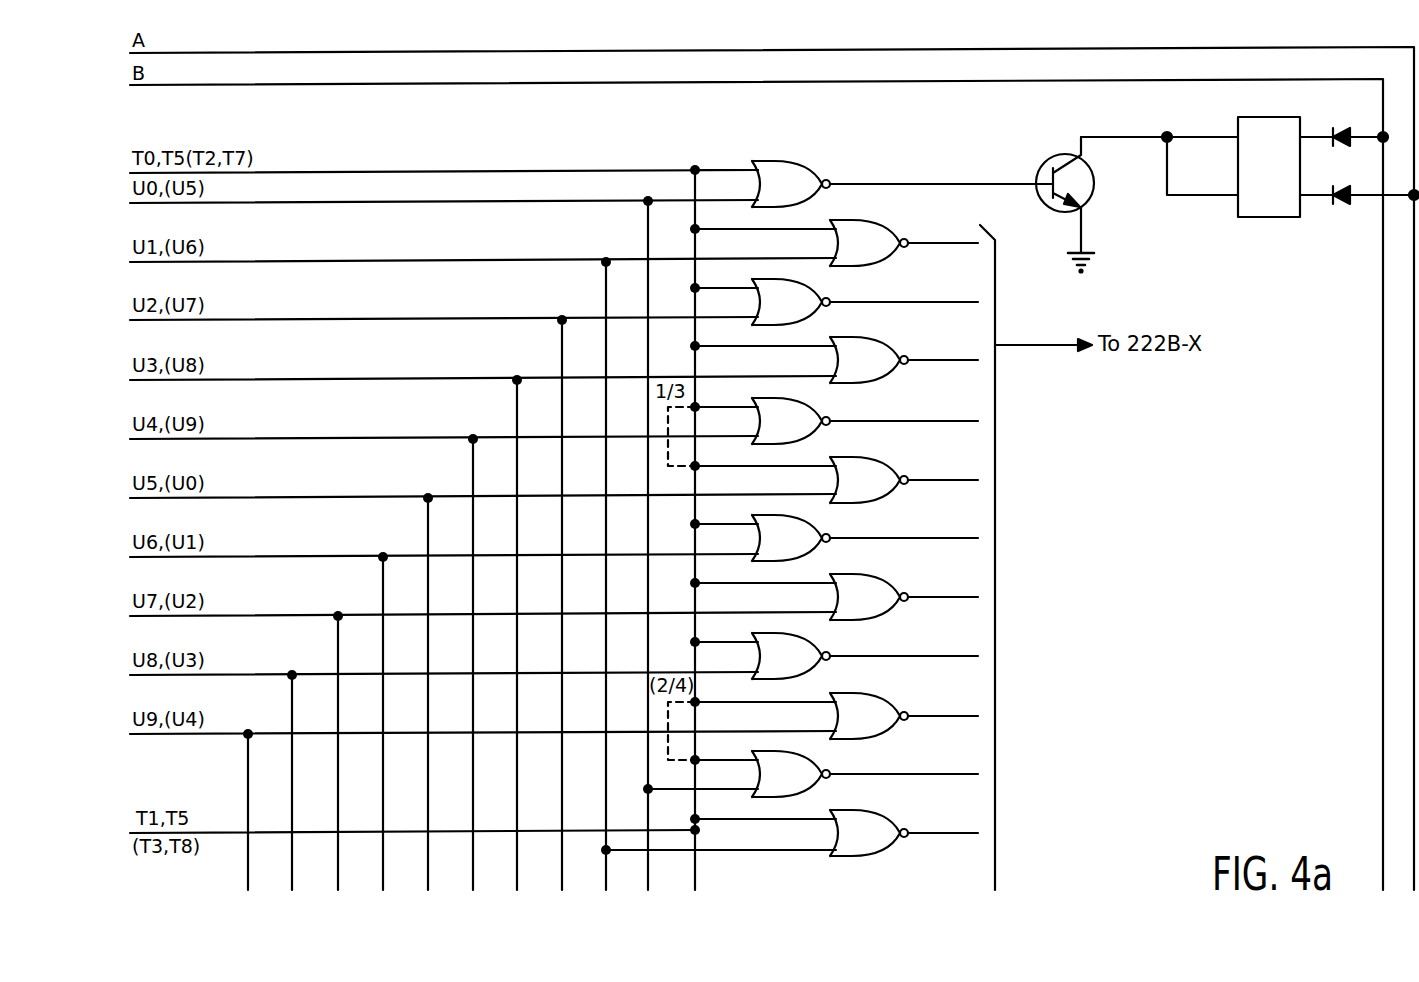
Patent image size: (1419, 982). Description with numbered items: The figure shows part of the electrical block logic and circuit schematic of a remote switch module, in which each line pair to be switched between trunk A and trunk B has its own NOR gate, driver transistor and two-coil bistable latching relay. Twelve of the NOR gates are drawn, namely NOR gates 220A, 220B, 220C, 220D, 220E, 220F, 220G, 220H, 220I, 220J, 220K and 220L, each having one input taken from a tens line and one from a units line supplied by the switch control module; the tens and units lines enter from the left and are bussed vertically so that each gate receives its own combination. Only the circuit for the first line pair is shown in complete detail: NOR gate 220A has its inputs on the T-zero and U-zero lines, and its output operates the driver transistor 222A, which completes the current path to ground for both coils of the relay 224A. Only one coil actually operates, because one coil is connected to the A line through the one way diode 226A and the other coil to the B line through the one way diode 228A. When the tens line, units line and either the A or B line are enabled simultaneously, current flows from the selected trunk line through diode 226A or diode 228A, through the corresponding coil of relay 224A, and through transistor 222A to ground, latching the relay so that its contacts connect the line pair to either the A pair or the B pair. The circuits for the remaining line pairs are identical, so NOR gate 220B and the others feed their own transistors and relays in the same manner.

The NOR gate 220A is at (812, 180).
The NOR gate 220B is at (886, 236).
The NOR gate 220C is at (812, 298).
The NOR gate 220D is at (886, 353).
The NOR gate 220E is at (812, 416).
The NOR gate 220F is at (886, 478).
The NOR gate 220G is at (812, 533).
The NOR gate 220H is at (886, 595).
The NOR gate 220I is at (812, 651).
The NOR gate 220J is at (886, 712).
The NOR gate 220K is at (812, 769).
The NOR gate 220L is at (886, 831).
The driver transistor 222A is at (1092, 194).
The bistable latching relay 224A is at (1247, 208).
The one way diode 226A is at (1345, 128).
The one way diode 228A is at (1345, 206).